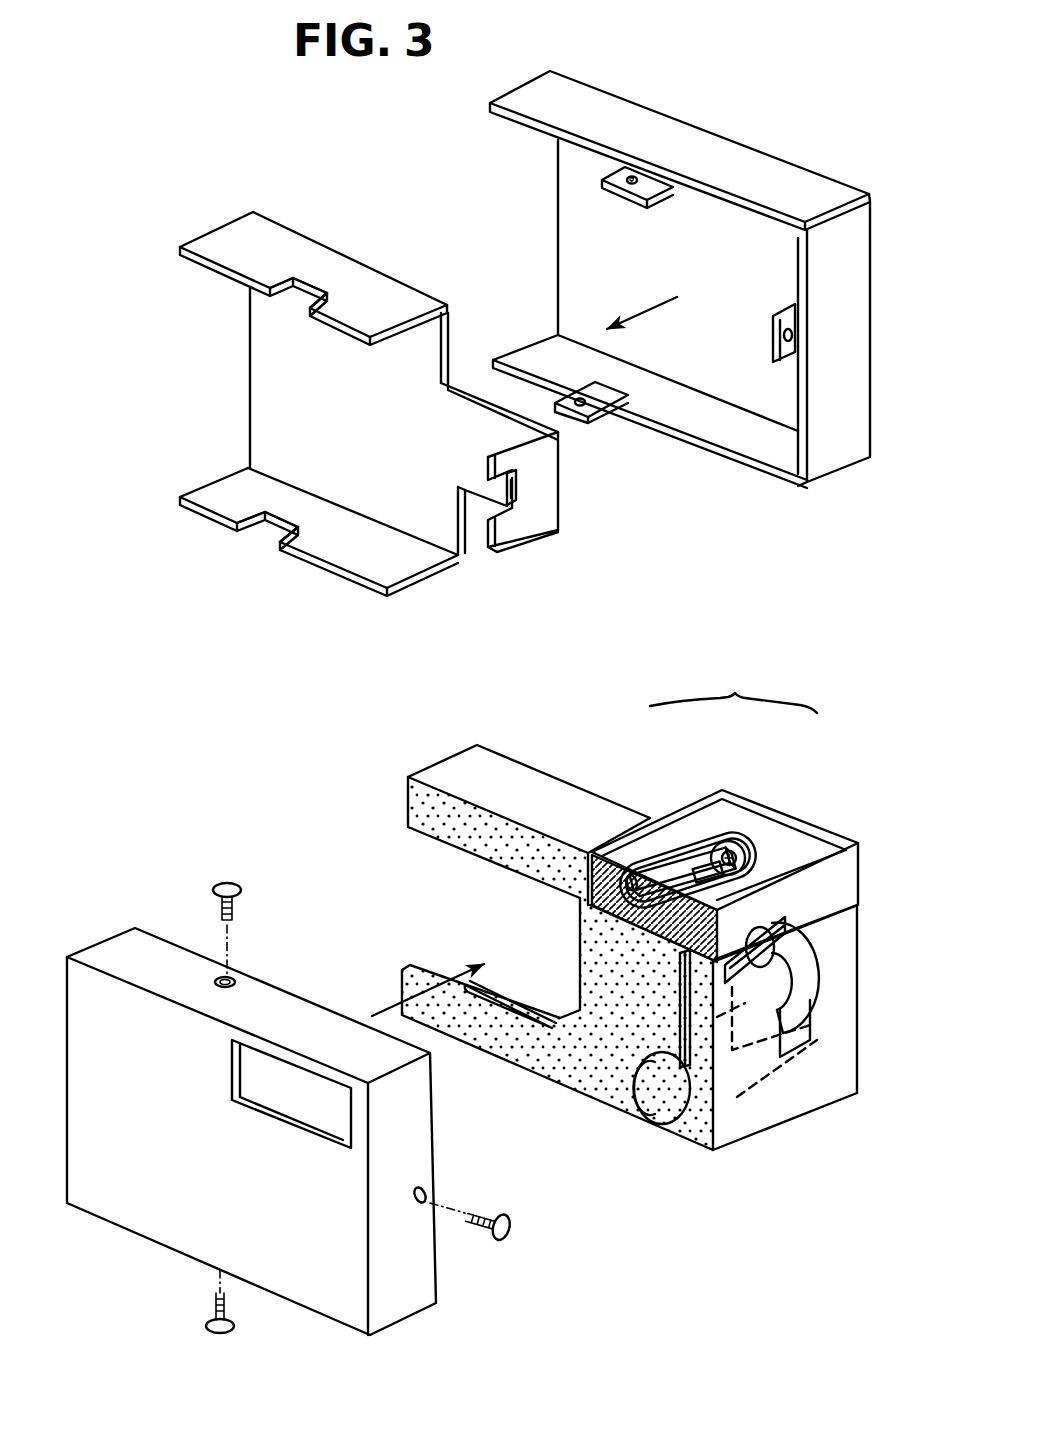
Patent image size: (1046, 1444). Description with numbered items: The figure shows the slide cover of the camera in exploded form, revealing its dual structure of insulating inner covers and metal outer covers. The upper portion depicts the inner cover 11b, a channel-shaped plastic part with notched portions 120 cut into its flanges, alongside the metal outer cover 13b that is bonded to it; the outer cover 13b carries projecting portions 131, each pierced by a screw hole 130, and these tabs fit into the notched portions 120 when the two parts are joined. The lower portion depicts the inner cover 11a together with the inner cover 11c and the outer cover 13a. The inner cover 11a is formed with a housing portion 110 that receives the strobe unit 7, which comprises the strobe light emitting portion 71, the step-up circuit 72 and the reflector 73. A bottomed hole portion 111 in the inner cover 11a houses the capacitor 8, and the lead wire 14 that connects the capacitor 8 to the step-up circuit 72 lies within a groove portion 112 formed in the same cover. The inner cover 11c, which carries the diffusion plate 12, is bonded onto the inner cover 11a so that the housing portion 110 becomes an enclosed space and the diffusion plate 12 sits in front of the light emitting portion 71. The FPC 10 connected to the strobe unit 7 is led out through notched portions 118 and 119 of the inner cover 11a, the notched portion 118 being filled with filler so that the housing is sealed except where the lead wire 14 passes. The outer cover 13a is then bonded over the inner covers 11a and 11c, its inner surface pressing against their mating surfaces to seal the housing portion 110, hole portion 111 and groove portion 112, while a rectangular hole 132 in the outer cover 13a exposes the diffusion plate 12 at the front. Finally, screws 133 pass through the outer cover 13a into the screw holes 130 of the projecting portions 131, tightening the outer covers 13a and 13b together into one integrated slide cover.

The strobe unit 7 is at (721, 778).
The capacitor 8 is at (673, 1107).
The FPC 10 is at (813, 983).
The inner cover 11a is at (442, 782).
The inner cover 11b is at (397, 307).
The inner cover 11c is at (797, 847).
The diffusion plate 12 is at (580, 932).
The outer cover 13a is at (163, 955).
The outer cover 13b is at (777, 187).
The lead wire 14 is at (693, 1005).
The strobe light emitting portion 71 is at (724, 845).
The step-up circuit 72 is at (753, 850).
The reflector 73 is at (655, 857).
The housing portion 110 is at (663, 853).
The hole portion 111 is at (660, 1120).
The groove portion 112 is at (692, 982).
The notched portion 118 is at (779, 921).
The notched portion 119 is at (813, 1057).
The notched portion 120 is at (283, 275).
The screw hole 130 is at (617, 180).
The projecting portion 131 is at (620, 182).
The rectangular hole 132 is at (240, 1073).
The screw 133 is at (237, 888).